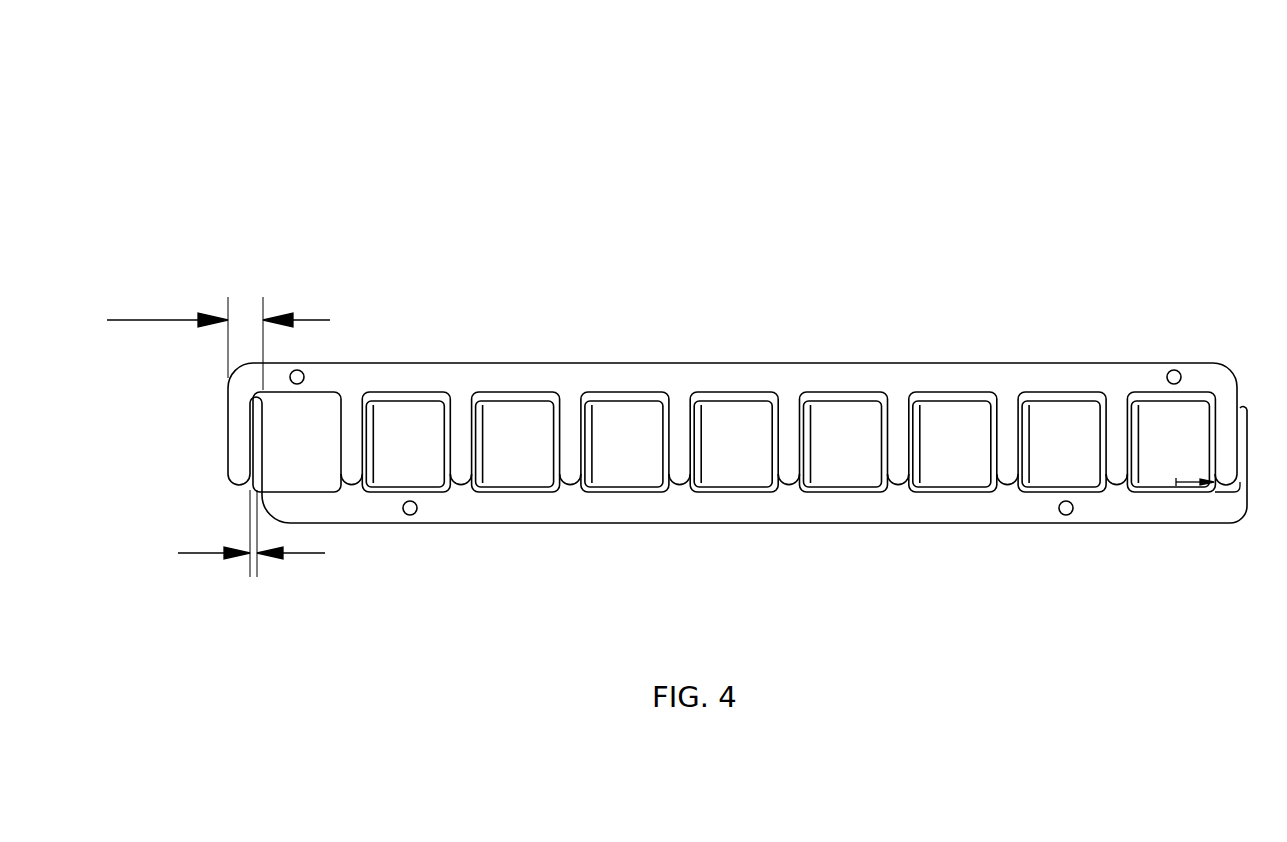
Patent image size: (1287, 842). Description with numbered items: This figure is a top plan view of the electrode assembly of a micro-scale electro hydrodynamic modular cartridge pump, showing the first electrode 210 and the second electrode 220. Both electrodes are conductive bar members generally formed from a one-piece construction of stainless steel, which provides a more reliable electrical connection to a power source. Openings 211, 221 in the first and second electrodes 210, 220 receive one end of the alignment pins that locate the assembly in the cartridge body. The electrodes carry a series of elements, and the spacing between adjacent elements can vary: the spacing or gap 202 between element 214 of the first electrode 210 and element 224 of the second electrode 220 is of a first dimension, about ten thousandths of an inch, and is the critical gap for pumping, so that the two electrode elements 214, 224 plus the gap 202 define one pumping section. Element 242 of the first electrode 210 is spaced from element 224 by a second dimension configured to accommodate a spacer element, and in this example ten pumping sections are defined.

The first electrode 210 is at (663, 362).
The second electrode 220 is at (667, 523).
The opening 211 is at (337, 359).
The opening 221 is at (430, 482).
The element 214 is at (233, 443).
The element 224 is at (262, 410).
The element 242 is at (347, 468).
The spacing or gap 202 is at (223, 533).